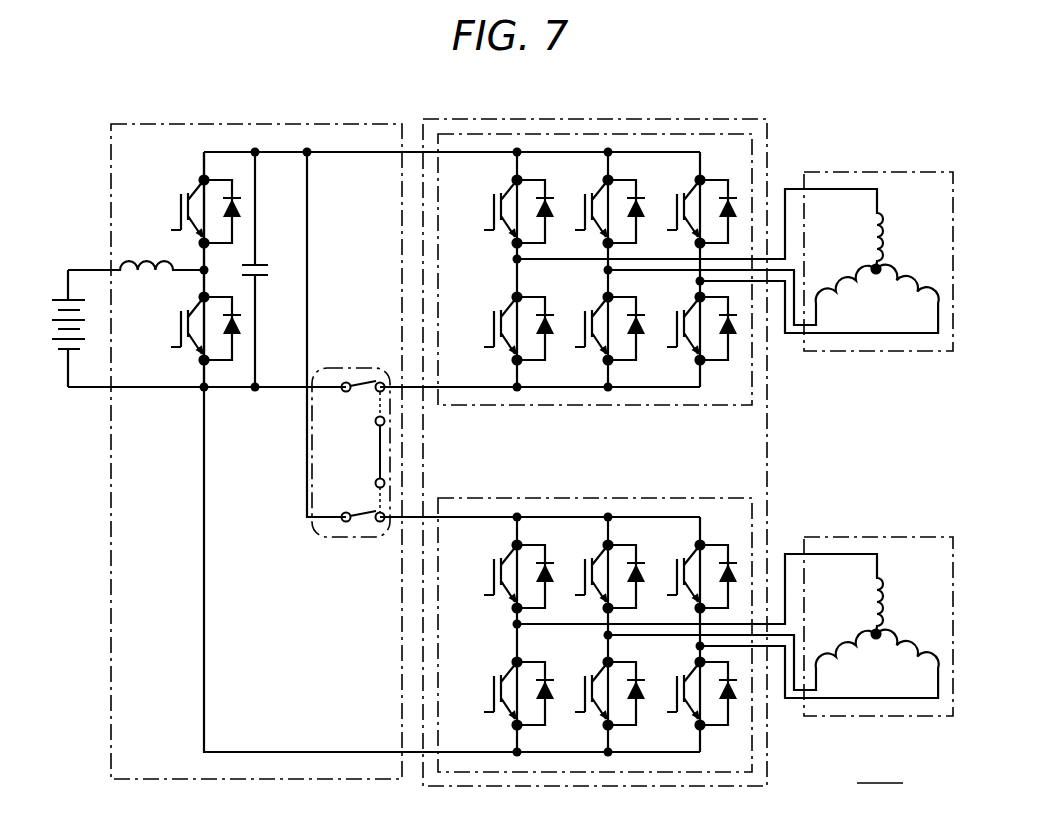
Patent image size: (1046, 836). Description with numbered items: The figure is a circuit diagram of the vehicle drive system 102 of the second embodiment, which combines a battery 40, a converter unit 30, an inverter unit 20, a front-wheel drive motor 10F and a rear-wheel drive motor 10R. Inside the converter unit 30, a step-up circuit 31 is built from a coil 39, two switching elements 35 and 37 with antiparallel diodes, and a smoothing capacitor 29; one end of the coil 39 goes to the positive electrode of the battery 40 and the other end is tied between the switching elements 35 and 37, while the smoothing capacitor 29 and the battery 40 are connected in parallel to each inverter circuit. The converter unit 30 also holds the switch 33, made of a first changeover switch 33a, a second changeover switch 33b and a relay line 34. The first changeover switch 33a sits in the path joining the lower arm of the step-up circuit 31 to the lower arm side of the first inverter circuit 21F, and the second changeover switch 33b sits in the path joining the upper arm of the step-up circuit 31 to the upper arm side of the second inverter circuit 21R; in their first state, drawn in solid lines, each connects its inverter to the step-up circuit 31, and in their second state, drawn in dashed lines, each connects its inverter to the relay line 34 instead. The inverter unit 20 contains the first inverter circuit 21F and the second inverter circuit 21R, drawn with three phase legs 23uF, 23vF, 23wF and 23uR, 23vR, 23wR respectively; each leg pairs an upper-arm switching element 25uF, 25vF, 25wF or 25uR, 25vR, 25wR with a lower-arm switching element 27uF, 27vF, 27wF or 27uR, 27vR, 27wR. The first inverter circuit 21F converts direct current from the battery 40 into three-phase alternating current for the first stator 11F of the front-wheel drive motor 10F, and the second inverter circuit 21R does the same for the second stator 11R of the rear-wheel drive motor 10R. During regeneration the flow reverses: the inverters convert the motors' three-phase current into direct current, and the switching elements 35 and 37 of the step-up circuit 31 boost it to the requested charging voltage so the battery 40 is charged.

The vehicle drive system 102 is at (880, 770).
The front-wheel drive motor 10F is at (885, 172).
The rear-wheel drive motor 10R is at (885, 537).
The first stator 11F is at (900, 248).
The second stator 11R is at (900, 613).
The inverter unit 20 is at (748, 119).
The first inverter circuit 21F is at (476, 406).
The second inverter circuit 21R is at (472, 498).
The u-phase leg of front inverter 23uF is at (518, 143).
The v-phase leg of front inverter 23vF is at (608, 143).
The w-phase leg of front inverter 23wF is at (700, 143).
The u-phase leg of rear inverter 23uR is at (518, 508).
The v-phase leg of rear inverter 23vR is at (608, 508).
The w-phase leg of rear inverter 23wR is at (700, 508).
The switching element 25uF is at (507, 186).
The switching element 25vF is at (598, 186).
The switching element 25wF is at (690, 186).
The switching element 25uR is at (507, 551).
The switching element 25vR is at (598, 551).
The switching element 25wR is at (690, 551).
The switching element 27uF is at (510, 353).
The switching element 27vF is at (601, 353).
The switching element 27wF is at (693, 353).
The switching element 27uR is at (510, 718).
The switching element 27vR is at (601, 718).
The switching element 27wR is at (693, 718).
The smoothing capacitor 29 is at (264, 256).
The converter unit 30 is at (312, 125).
The step-up circuit 31 is at (207, 139).
The switch 33 is at (352, 369).
The first changeover switch 33a is at (369, 401).
The second changeover switch 33b is at (368, 506).
The relay line 34 is at (382, 446).
The switching element 35 is at (190, 185).
The switching element 37 is at (193, 355).
The coil 39 is at (146, 254).
The battery 40 is at (56, 357).